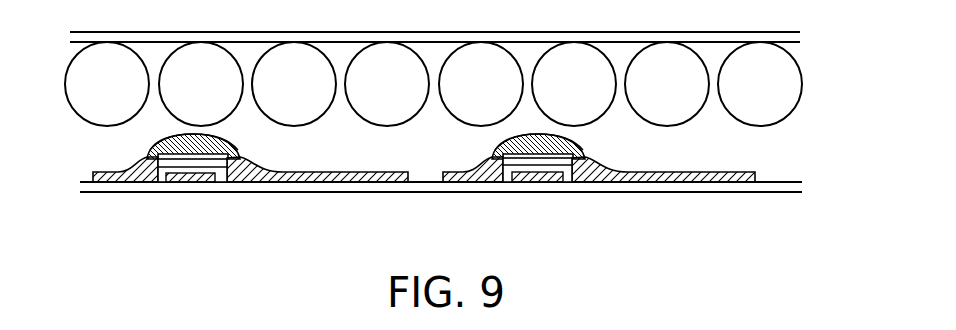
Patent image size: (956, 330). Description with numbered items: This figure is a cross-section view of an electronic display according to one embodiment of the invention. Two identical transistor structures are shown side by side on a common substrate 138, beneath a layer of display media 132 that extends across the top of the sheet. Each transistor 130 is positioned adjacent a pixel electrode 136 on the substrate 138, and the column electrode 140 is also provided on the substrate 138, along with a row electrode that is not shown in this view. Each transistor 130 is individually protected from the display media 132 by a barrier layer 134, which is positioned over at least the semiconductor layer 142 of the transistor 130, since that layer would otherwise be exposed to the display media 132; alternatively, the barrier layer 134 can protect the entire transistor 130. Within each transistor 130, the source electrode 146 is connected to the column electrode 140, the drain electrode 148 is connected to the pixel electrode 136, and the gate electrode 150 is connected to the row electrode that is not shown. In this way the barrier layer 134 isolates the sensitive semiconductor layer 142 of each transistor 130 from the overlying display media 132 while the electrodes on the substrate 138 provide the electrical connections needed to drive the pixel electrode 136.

The transistor 130 is at (350, 159).
The display media 132 is at (825, 72).
The barrier layer 134 is at (200, 153).
The pixel electrode 136 is at (372, 175).
The substrate 138 is at (290, 186).
The column electrode 140 is at (112, 180).
The semiconductor layer 142 is at (183, 162).
The source electrode 146 is at (147, 155).
The drain electrode 148 is at (232, 160).
The gate electrode 150 is at (200, 180).